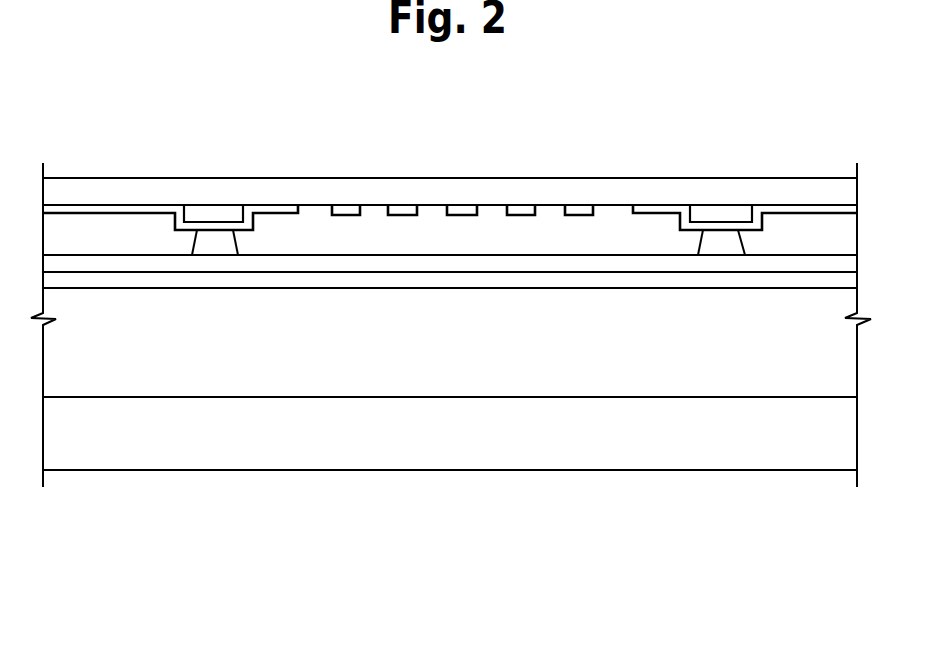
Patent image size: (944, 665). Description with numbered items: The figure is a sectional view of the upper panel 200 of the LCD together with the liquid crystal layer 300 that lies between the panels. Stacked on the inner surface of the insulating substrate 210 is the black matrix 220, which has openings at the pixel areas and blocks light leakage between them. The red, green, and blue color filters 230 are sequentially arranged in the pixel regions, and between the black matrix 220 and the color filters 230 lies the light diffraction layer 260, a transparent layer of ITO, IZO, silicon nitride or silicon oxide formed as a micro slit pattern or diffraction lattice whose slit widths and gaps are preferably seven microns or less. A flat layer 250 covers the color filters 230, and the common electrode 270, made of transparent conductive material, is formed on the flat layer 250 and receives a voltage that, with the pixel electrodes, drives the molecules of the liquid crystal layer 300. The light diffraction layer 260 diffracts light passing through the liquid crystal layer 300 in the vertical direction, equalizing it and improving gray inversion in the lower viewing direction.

The upper panel 200 is at (488, 166).
The insulating substrate 210 is at (312, 188).
The black matrix 220 is at (213, 212).
The red, green, and blue color filters 230 is at (136, 232).
The flat layer 250 is at (428, 265).
The light diffraction layer 260 is at (77, 210).
The common electrode 270 is at (612, 280).
The liquid crystal layer 300 is at (220, 365).